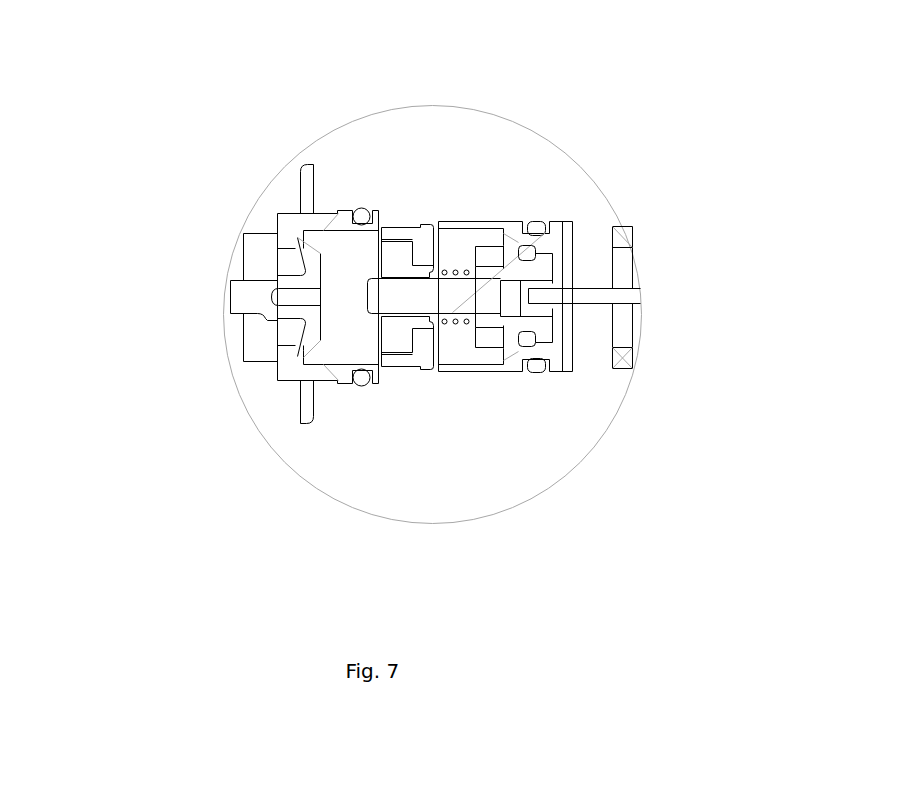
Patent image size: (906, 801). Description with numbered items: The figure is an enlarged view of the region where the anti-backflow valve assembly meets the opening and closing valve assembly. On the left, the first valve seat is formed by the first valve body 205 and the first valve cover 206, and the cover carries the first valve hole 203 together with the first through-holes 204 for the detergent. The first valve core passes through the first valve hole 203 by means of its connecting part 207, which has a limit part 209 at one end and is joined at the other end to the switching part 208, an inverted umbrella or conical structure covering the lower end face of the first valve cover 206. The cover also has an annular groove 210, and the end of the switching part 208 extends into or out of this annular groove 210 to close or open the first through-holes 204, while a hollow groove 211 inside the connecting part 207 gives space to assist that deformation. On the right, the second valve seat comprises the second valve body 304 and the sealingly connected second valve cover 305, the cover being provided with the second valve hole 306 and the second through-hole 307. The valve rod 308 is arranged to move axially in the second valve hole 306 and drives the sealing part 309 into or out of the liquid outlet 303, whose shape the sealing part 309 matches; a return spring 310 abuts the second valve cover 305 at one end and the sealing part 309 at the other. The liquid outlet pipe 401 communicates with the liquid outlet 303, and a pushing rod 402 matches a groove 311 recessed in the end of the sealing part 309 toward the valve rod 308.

The first valve hole 203 is at (262, 326).
The first through-hole 204 is at (277, 352).
The first valve body 205 is at (315, 198).
The first valve cover 206 is at (274, 218).
The connecting part 207 is at (272, 277).
The switching part 208 is at (310, 345).
The limit part 209 is at (260, 261).
The annular groove 210 is at (279, 388).
The hollow groove 211 is at (277, 301).
The liquid outlet 303 is at (563, 244).
The second valve body 304 is at (515, 210).
The second valve cover 305 is at (384, 212).
The second valve hole 306 is at (408, 336).
The second through-hole 307 is at (402, 220).
The valve rod 308 is at (443, 275).
The sealing part 309 is at (493, 319).
The return spring 310 is at (454, 353).
The groove 311 is at (523, 311).
The liquid outlet pipe 401 is at (647, 316).
The pushing rod 402 is at (589, 306).